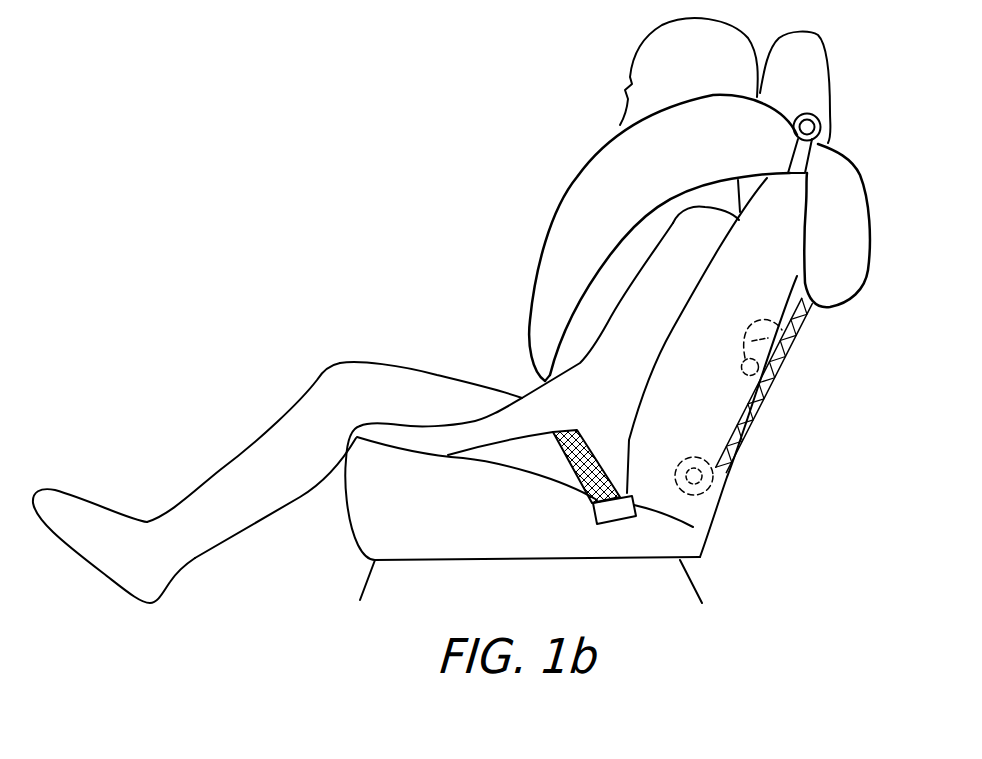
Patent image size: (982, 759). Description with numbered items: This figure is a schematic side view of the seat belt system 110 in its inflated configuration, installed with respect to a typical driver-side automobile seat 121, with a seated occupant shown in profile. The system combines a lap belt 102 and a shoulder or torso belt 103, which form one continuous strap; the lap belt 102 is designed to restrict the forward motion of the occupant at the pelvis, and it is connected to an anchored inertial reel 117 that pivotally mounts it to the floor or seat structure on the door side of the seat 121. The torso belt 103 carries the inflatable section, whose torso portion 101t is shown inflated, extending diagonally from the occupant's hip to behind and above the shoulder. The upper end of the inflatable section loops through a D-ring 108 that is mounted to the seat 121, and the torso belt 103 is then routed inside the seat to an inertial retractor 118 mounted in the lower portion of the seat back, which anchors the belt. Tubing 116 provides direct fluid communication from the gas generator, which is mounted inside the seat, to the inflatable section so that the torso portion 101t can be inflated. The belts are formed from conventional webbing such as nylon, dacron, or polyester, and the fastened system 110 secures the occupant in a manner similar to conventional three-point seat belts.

The seat belt system 110 is at (440, 207).
The torso portion of inflatable section 101t is at (580, 180).
The D-ring 108 is at (825, 133).
The tubing 116 is at (780, 346).
The torso belt 103 is at (762, 389).
The inertial retractor 118 is at (716, 484).
The anchored inertial reel 117 is at (693, 527).
The lap belt 102 is at (562, 458).
The automobile seat 121 is at (530, 586).